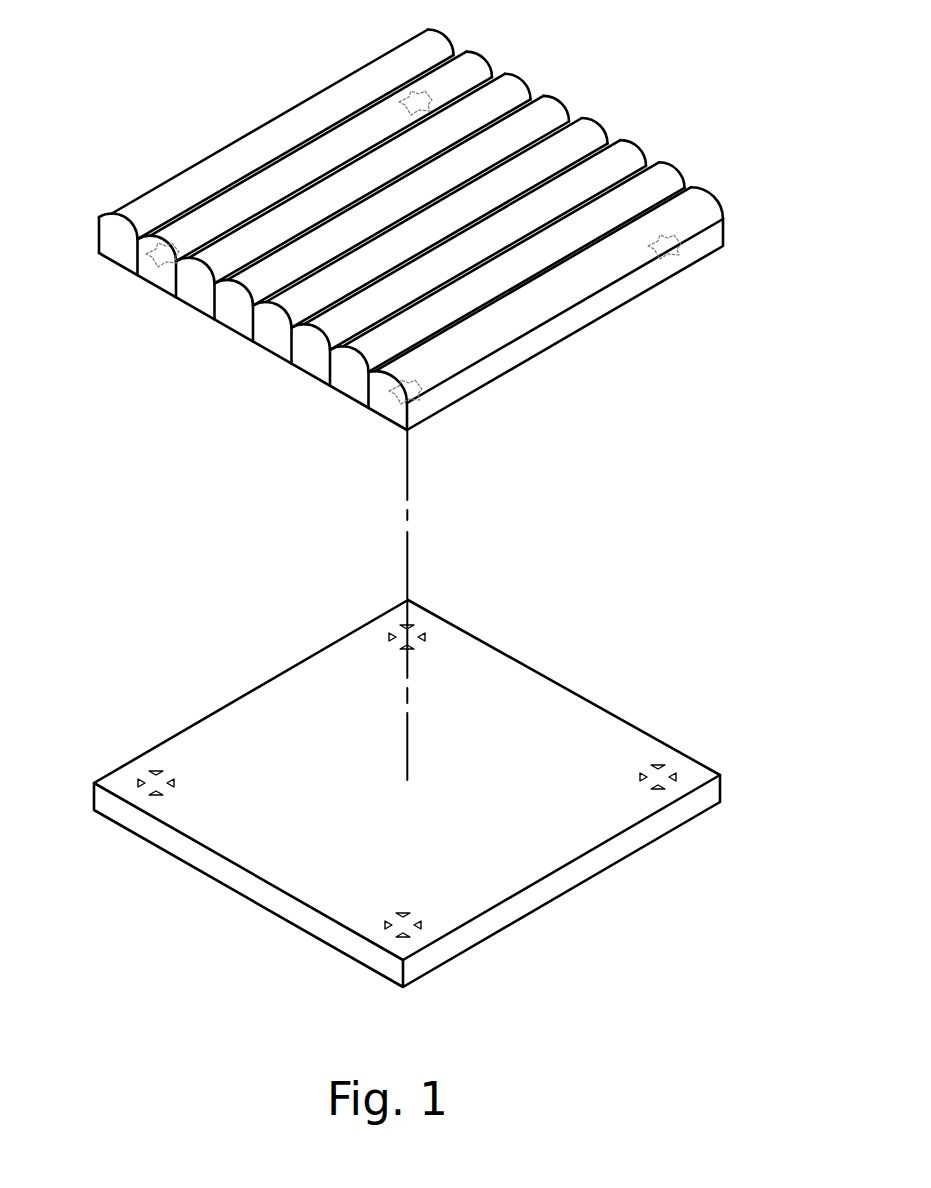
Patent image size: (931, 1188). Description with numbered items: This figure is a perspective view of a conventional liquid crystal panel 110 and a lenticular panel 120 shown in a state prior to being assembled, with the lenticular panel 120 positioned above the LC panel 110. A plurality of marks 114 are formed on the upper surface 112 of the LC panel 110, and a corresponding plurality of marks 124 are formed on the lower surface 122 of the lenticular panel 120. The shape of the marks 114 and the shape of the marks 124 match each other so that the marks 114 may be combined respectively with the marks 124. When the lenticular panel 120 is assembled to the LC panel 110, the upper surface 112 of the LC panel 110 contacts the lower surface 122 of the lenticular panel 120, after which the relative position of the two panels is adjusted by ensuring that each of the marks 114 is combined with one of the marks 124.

The liquid crystal panel 110 is at (443, 793).
The upper surface 112 is at (530, 723).
The marks 114 is at (698, 768).
The lenticular panel 120 is at (448, 230).
The lower surface 122 is at (268, 363).
The marks 124 is at (675, 238).